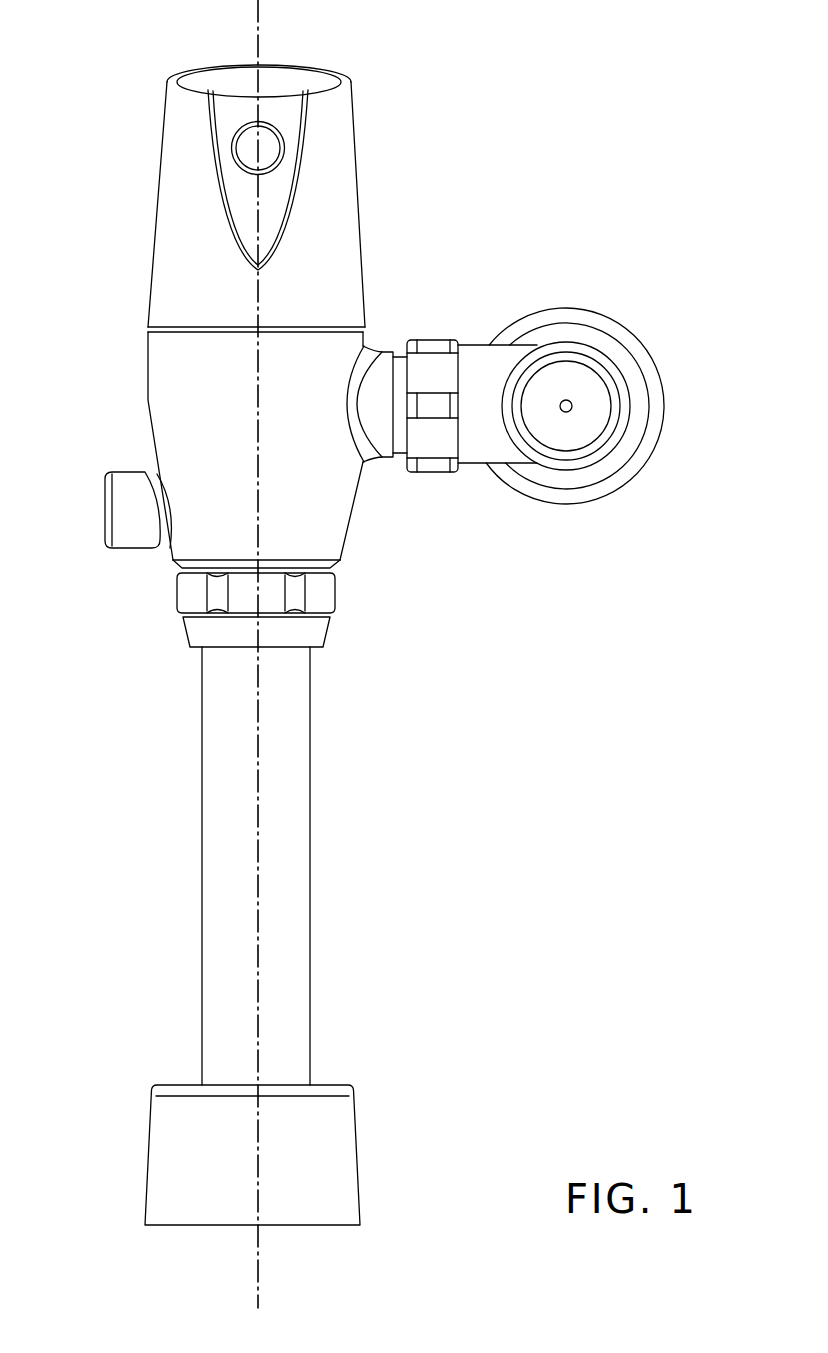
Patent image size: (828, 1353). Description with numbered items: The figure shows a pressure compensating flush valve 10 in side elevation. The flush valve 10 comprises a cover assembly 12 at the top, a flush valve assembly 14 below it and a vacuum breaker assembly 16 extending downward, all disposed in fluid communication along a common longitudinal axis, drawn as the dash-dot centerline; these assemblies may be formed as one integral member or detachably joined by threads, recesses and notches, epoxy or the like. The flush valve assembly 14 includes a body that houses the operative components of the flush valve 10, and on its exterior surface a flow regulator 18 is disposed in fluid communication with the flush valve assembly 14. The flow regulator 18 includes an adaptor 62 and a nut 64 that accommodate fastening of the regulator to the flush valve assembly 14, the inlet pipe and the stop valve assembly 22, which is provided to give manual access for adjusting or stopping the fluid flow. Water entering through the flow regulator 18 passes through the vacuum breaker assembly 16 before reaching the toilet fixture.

The flush valve 10 is at (462, 114).
The cover assembly 12 is at (357, 222).
The flush valve assembly 14 is at (148, 385).
The vacuum breaker assembly 16 is at (310, 853).
The flow regulator 18 is at (483, 472).
The stop valve assembly 22 is at (580, 435).
The adaptor 62 is at (478, 352).
The nut 64 is at (433, 340).